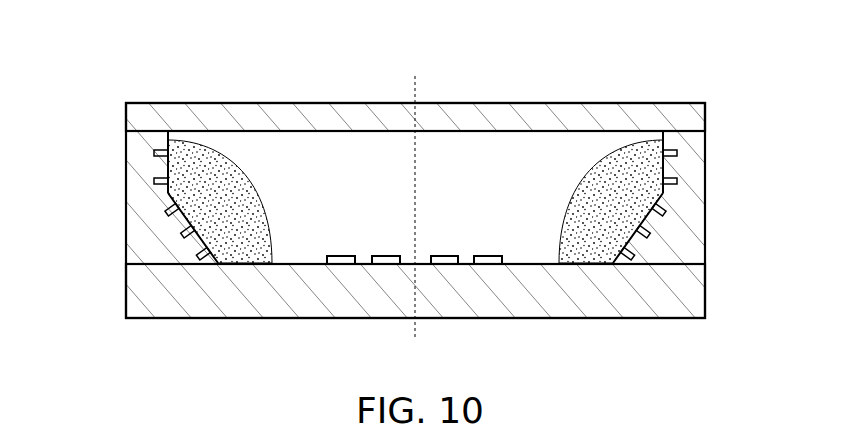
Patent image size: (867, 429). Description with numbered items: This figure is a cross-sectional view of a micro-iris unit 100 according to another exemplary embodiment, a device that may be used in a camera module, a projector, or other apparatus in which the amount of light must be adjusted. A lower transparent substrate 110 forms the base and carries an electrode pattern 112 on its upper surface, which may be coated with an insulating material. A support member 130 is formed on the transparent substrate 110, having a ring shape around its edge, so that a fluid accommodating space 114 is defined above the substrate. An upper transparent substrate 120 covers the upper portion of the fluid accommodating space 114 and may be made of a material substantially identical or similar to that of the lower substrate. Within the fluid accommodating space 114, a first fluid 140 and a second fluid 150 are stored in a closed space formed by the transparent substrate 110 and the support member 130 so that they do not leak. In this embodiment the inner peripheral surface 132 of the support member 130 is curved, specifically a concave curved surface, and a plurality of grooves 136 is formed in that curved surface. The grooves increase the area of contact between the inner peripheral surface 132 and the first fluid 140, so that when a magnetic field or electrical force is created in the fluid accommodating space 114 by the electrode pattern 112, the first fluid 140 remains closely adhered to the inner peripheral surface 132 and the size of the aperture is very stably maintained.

The micro-iris unit 100 is at (559, 80).
The transparent substrate 110 is at (693, 287).
The electrode pattern 112 is at (445, 265).
The fluid accommodating space 114 is at (503, 183).
The transparent substrate 120 is at (693, 115).
The support member 130 is at (416, 197).
The inner peripheral surface 132 is at (163, 188).
The grooves 136 is at (167, 218).
The first fluid 140 is at (231, 172).
The second fluid 150 is at (335, 145).